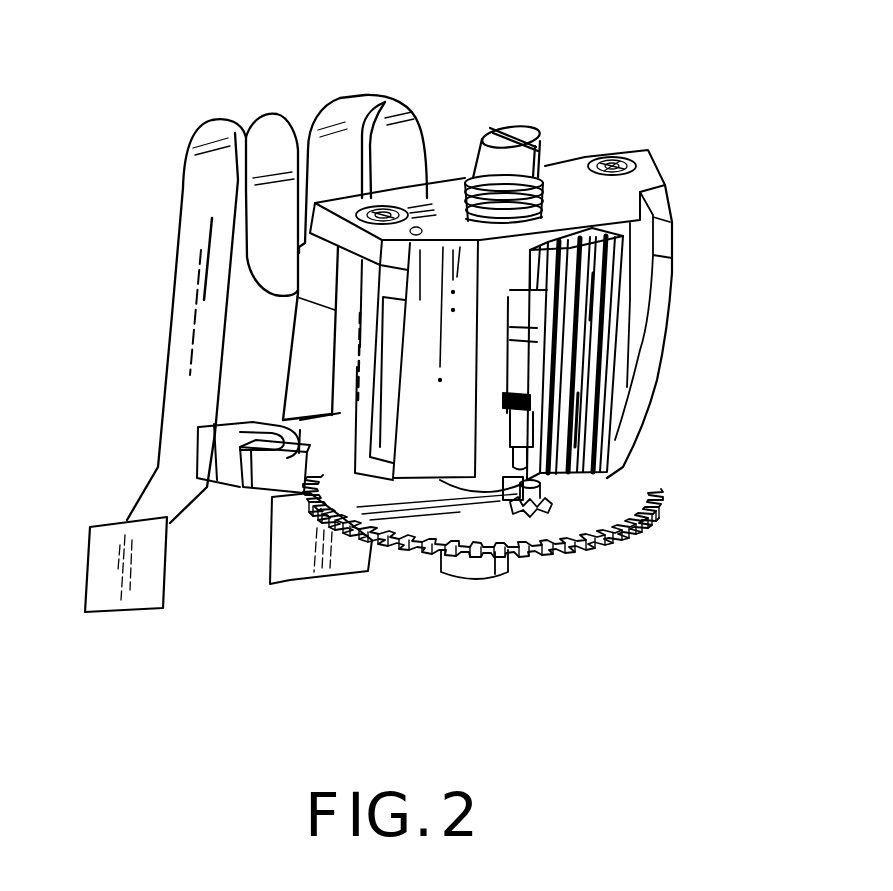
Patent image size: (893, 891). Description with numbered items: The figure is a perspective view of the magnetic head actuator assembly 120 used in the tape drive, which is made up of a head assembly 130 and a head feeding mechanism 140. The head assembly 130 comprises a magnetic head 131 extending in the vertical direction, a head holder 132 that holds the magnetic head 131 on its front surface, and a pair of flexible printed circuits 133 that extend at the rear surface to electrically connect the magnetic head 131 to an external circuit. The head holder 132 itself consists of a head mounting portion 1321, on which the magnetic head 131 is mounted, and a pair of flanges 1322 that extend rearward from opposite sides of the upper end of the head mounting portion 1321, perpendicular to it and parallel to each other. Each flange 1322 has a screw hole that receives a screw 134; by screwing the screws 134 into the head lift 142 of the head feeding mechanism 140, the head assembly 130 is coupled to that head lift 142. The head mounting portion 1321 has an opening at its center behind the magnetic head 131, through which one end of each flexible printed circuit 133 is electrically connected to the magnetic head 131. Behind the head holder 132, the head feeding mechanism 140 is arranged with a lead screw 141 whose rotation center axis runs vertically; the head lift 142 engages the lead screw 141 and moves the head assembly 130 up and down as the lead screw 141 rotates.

The actuator assembly 120 is at (543, 580).
The head assembly 130 is at (658, 172).
The magnetic head 131 is at (620, 327).
The head holder 132 is at (633, 352).
The head mounting portion 1321 is at (637, 277).
The flanges 1322 is at (603, 165).
The flexible printed circuits 133 is at (357, 97).
The screw 134 is at (388, 210).
The head feeding mechanism 140 is at (516, 128).
The lead screw 141 is at (550, 187).
The head lift 142 is at (337, 273).